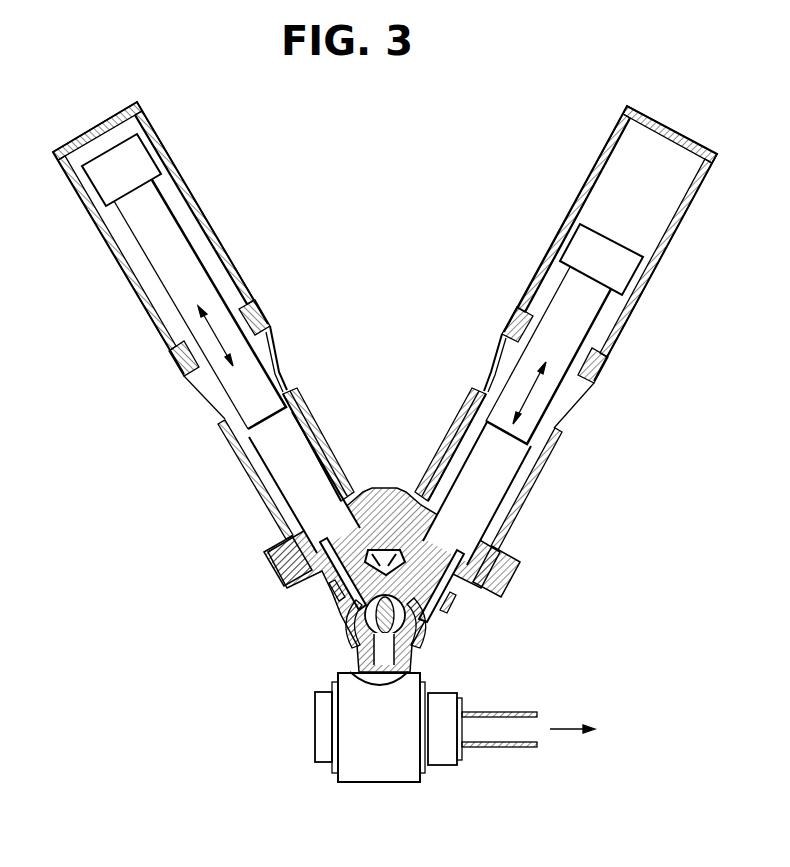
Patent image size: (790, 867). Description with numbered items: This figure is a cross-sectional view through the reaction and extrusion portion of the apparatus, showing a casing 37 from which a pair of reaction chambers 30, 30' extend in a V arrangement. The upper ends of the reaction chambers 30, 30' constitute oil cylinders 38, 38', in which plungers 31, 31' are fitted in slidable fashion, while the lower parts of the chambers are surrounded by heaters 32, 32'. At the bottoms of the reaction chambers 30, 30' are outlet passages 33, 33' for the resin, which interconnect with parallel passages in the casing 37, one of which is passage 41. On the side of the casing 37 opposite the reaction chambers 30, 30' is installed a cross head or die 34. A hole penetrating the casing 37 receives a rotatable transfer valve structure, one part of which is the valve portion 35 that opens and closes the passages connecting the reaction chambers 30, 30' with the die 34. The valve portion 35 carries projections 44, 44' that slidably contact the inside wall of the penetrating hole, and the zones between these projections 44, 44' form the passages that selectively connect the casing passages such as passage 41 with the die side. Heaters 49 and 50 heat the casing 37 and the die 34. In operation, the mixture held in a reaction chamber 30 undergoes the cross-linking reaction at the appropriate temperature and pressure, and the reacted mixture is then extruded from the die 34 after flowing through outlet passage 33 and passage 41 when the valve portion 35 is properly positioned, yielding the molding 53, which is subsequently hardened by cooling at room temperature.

The reaction chamber 30 is at (271, 439).
The reaction chamber 30' is at (510, 449).
The plunger 31 is at (184, 281).
The plunger 31' is at (560, 334).
The heater 32 is at (337, 444).
The heater 32' is at (493, 459).
The outlet passage 33 is at (328, 550).
The outlet passage 33' is at (453, 552).
The cross head or die 34 is at (326, 720).
The valve portion 35 is at (368, 626).
The casing 37 is at (325, 590).
The oil cylinder 38 is at (161, 239).
The oil cylinder 38' is at (609, 244).
The parallel passage 41 is at (346, 601).
The projection 44 is at (436, 623).
The projection 44' is at (330, 642).
The heater 49 is at (352, 666).
The heater 50 is at (377, 770).
The molding 53 is at (492, 745).